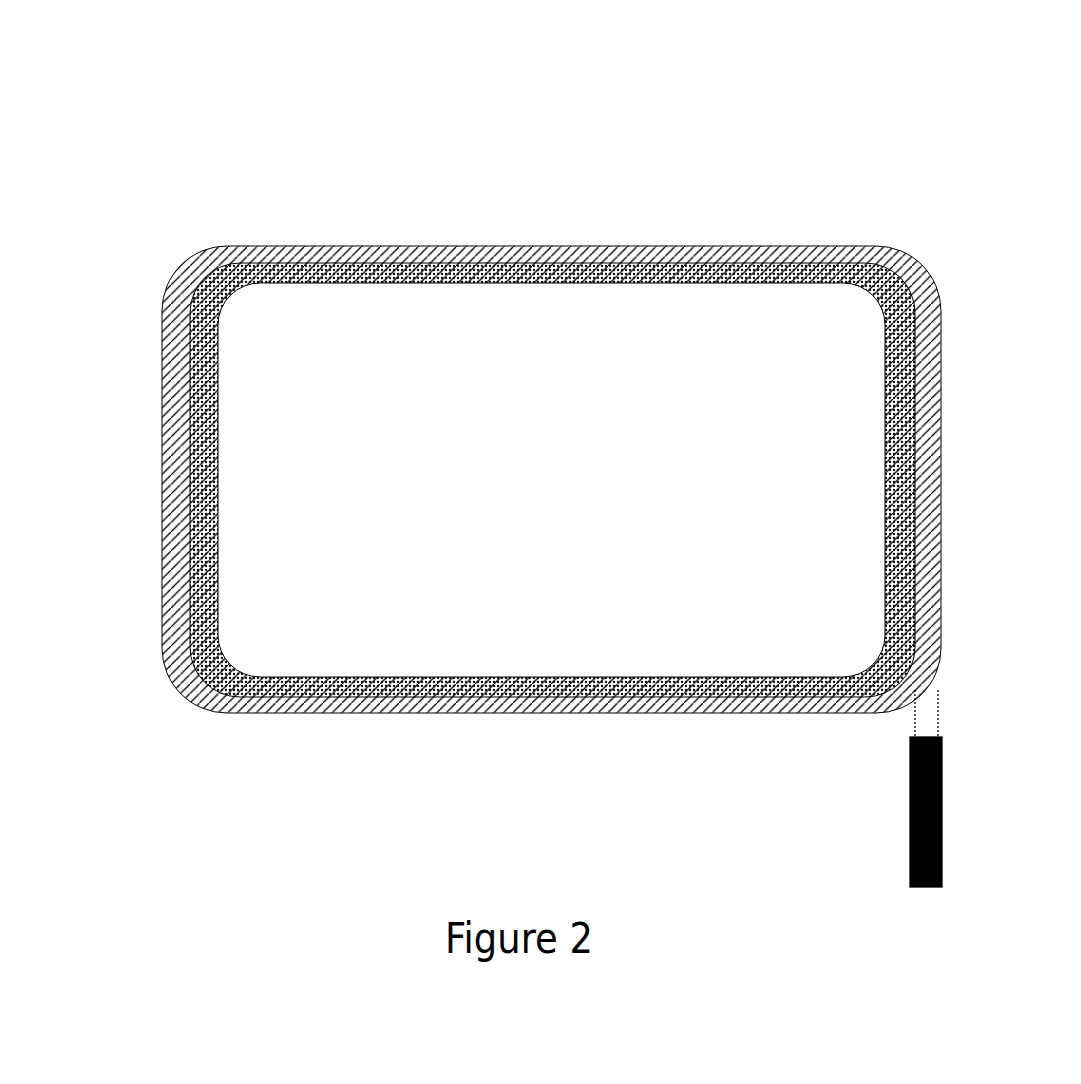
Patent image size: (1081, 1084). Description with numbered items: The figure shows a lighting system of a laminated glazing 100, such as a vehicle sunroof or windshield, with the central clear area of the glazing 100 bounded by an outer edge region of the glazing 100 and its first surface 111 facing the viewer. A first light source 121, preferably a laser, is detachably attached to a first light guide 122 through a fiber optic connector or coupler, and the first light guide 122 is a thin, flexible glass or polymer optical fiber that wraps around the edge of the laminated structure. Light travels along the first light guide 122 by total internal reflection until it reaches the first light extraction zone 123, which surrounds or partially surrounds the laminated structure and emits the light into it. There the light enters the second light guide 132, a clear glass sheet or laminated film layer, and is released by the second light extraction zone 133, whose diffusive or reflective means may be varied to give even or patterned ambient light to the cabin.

The glazing 100 is at (587, 462).
The first surface 111 is at (435, 475).
The first light source 121 is at (942, 833).
The first light guide 122 is at (943, 705).
The first light extraction zone 123 is at (913, 270).
The second light guide 132 is at (173, 506).
The second light extraction zone 133 is at (203, 284).